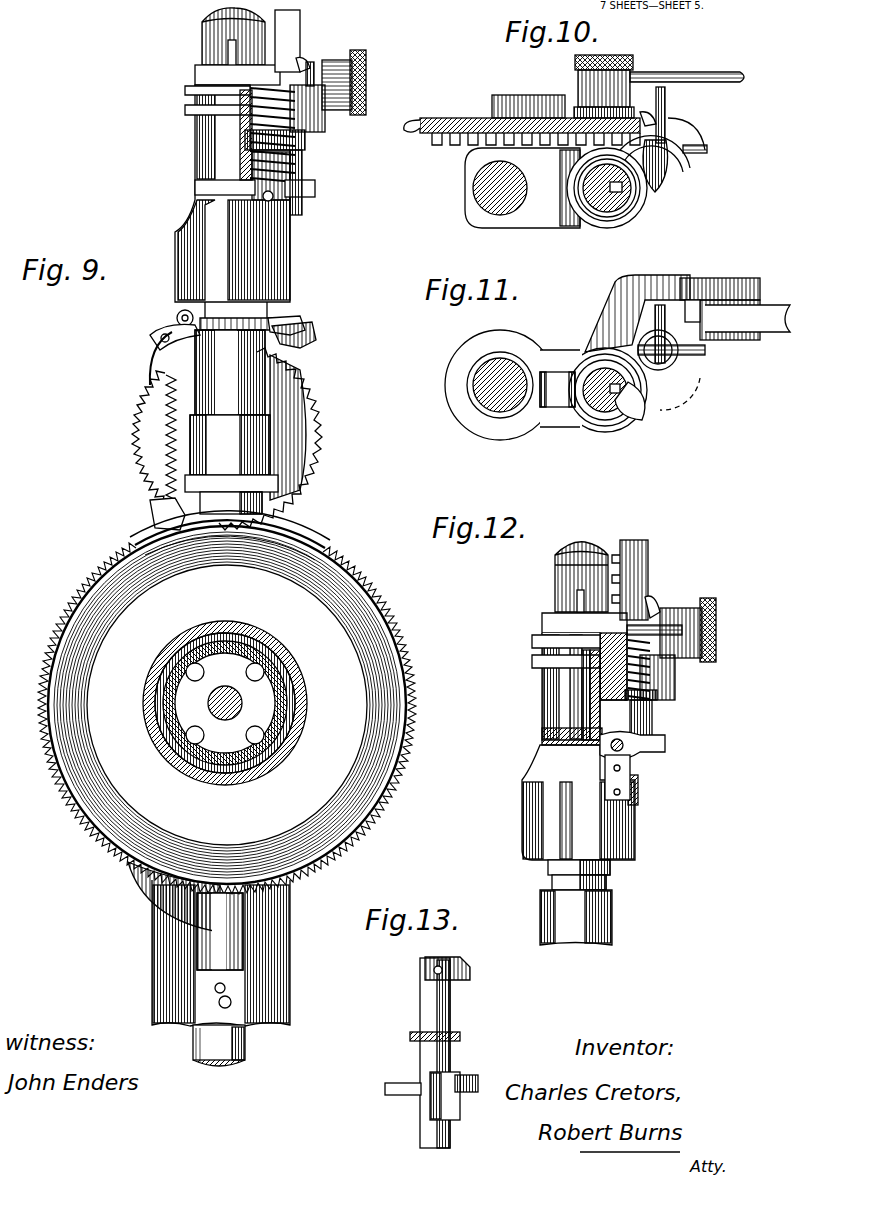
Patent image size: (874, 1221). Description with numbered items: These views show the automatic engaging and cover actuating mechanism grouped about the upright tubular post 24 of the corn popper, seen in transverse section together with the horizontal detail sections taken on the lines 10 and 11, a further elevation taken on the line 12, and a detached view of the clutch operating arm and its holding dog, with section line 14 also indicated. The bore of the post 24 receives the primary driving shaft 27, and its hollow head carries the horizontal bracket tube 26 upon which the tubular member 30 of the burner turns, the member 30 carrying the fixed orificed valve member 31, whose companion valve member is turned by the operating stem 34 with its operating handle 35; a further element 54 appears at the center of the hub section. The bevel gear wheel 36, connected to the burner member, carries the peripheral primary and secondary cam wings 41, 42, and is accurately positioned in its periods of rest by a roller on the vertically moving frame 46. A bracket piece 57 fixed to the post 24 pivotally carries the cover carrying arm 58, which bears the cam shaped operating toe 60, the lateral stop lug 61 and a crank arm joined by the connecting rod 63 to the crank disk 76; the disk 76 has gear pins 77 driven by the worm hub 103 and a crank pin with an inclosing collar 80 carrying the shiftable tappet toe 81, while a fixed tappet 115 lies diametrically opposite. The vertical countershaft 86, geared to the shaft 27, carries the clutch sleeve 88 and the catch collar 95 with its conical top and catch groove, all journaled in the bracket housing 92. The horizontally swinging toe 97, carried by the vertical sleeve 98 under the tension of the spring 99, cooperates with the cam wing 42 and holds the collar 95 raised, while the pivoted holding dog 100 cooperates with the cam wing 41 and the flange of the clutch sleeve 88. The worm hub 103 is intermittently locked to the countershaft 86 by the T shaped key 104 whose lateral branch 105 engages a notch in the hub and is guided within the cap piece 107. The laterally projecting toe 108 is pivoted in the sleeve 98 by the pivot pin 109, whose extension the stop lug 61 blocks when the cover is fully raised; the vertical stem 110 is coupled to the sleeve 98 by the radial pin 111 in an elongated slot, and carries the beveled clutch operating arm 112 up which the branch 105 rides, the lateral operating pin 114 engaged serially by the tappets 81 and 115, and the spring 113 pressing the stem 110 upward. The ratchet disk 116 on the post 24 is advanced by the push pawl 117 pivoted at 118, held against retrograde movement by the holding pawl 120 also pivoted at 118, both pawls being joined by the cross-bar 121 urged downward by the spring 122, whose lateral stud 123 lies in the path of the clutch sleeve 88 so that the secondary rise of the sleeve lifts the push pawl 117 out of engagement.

In FIG. 9, the section line 10— 10 is at (192, 63).
In FIG. 9, the section line 11— 11 is at (192, 178).
In FIG. 11, the section line 12— 12 is at (665, 430).
In FIG. 11, the section line 14- 14 is at (605, 470).
In FIG. 9, the upright tubular post 24 is at (152, 950).
In FIG. 10, the upright tubular post 24 is at (478, 224).
In FIG. 11, the upright tubular post 24 is at (447, 375).
In FIG. 9, the horizontal bracket tube 26 is at (150, 700).
In FIG. 9, the primary driving shaft 27 is at (245, 1045).
In FIG. 9, the horizontal tubular member 30 is at (160, 712).
In FIG. 9, the fixed valve member 31 is at (246, 672).
In FIG. 9, the operating stem 34 is at (219, 1002).
In FIG. 9, the operating handle 35 is at (216, 986).
In FIG. 9, the bevel gear wheel 36 is at (60, 610).
In FIG. 9, the primary cam wing 41 is at (292, 512).
In FIG. 9, the secondary cam wing 42 is at (150, 908).
In FIG. 9, the vertically moving frame 46 is at (220, 931).
In FIG. 9, the central shaft 54 is at (225, 716).
In FIG. 9, the bracket piece 57 is at (178, 236).
In FIG. 12, the bracket piece 57 is at (525, 794).
In FIG. 11, the carrying arm 58 is at (760, 332).
In FIG. 11, the cam shaped operating toe 60 is at (700, 278).
In FIG. 11, the lateral stop lug 61 is at (725, 300).
In FIG. 9, the connecting rod 63 is at (352, 82).
In FIG. 10, the connecting rod 63 is at (695, 72).
In FIG. 12, the connecting rod 63 is at (703, 630).
In FIG. 9, the crank disk 76 is at (292, 22).
In FIG. 10, the crank disk 76 is at (458, 118).
In FIG. 12, the crank disk 76 is at (636, 540).
In FIG. 10, the gear pins 77 is at (475, 145).
In FIG. 12, the gear pins 77 is at (625, 562).
In FIG. 9, the inclosing collar 80 is at (366, 100).
In FIG. 10, the inclosing collar 80 is at (578, 78).
In FIG. 12, the inclosing collar 80 is at (716, 610).
In FIG. 9, the operating tappet toe 81 is at (305, 60).
In FIG. 10, the operating tappet toe 81 is at (645, 112).
In FIG. 12, the operating tappet toe 81 is at (652, 597).
In FIG. 10, the vertical countershaft 86 is at (603, 212).
In FIG. 11, the vertical countershaft 86 is at (598, 410).
In FIG. 9, the clutch sleeve 88 is at (231, 464).
In FIG. 12, the clutch sleeve 88 is at (576, 902).
In FIG. 9, the bracket housing 92 is at (242, 128).
In FIG. 10, the bracket housing 92 is at (690, 128).
In FIG. 12, the bracket housing 92 is at (582, 690).
In FIG. 11, the catch collar 95 is at (610, 412).
In FIG. 9, the horizontally swinging toe 97 is at (196, 188).
In FIG. 11, the horizontally swinging toe 97 is at (650, 400).
In FIG. 12, the horizontally swinging toe 97 is at (542, 738).
In FIG. 13, the horizontally swinging toe 97 is at (476, 1078).
In FIG. 9, the vertical sleeve 98 is at (298, 215).
In FIG. 12, the vertical sleeve 98 is at (597, 702).
In FIG. 9, the spring 99 is at (296, 158).
In FIG. 11, the spring 99 is at (645, 338).
In FIG. 12, the spring 99 is at (597, 718).
In FIG. 13, the spring 99 is at (420, 998).
In FIG. 9, the pivoted holding dog 100 is at (150, 512).
In FIG. 9, the worm hub 103 is at (186, 108).
In FIG. 12, the worm hub 103 is at (533, 650).
In FIG. 10, the T shaped key 104 is at (618, 210).
In FIG. 9, the lateral branch 105 is at (228, 52).
In FIG. 12, the lateral branch 105 is at (577, 598).
In FIG. 9, the cap piece 107 is at (205, 30).
In FIG. 12, the cap piece 107 is at (558, 578).
In FIG. 9, the laterally projecting toe 108 is at (312, 192).
In FIG. 11, the laterally projecting toe 108 is at (655, 310).
In FIG. 12, the laterally projecting toe 108 is at (665, 745).
In FIG. 13, the laterally projecting toe 108 is at (448, 1072).
In FIG. 9, the pivot pin 109 is at (265, 199).
In FIG. 11, the pivot pin 109 is at (700, 356).
In FIG. 13, the pivot pin 109 is at (397, 1083).
In FIG. 12, the vertical stem 110 is at (590, 672).
In FIG. 9, the radial pin 111 is at (305, 142).
In FIG. 10, the radial pin 111 is at (708, 152).
In FIG. 12, the radial pin 111 is at (657, 697).
In FIG. 13, the radial pin 111 is at (445, 1032).
In FIG. 9, the clutch operating arm 112 is at (198, 72).
In FIG. 10, the clutch operating arm 112 is at (668, 178).
In FIG. 12, the clutch operating arm 112 is at (543, 622).
In FIG. 13, the clutch operating arm 112 is at (468, 965).
In FIG. 9, the spring 113 is at (325, 118).
In FIG. 12, the spring 113 is at (676, 675).
In FIG. 9, the lateral operating pin 114 is at (312, 82).
In FIG. 10, the lateral operating pin 114 is at (666, 100).
In FIG. 12, the lateral operating pin 114 is at (665, 627).
In FIG. 13, the lateral operating pin 114 is at (438, 966).
In FIG. 10, the fixed tappet 115 is at (406, 132).
In FIG. 9, the ratchet disk 116 is at (316, 412).
In FIG. 9, the push pawl 117 is at (312, 336).
In FIG. 9, the pivot 118 is at (180, 312).
In FIG. 9, the holding pawl 120 is at (150, 358).
In FIG. 9, the cross-bar 121 is at (155, 330).
In FIG. 9, the spring 122 is at (162, 468).
In FIG. 9, the lateral stud 123 is at (230, 372).